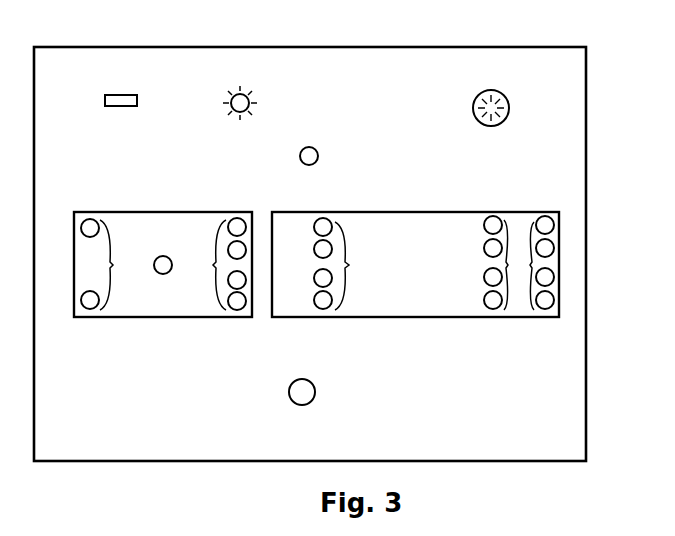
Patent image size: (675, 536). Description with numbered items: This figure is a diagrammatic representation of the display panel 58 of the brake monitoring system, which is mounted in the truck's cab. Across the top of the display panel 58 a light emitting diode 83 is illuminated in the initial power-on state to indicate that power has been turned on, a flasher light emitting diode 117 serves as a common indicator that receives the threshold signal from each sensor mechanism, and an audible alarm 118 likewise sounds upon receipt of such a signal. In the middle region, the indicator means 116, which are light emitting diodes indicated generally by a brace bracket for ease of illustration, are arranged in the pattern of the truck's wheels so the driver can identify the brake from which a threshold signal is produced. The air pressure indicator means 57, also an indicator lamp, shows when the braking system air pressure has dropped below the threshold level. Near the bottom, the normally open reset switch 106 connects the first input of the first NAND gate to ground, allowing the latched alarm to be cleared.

The display panel 58 is at (566, 178).
The light emitting diode 83 is at (249, 103).
The flasher light emitting diode 117 is at (316, 162).
The audible alarm 118 is at (497, 125).
The indicator means 116 is at (316, 264).
The air pressure indicator means 57 is at (165, 256).
The reset switch 106 is at (312, 397).